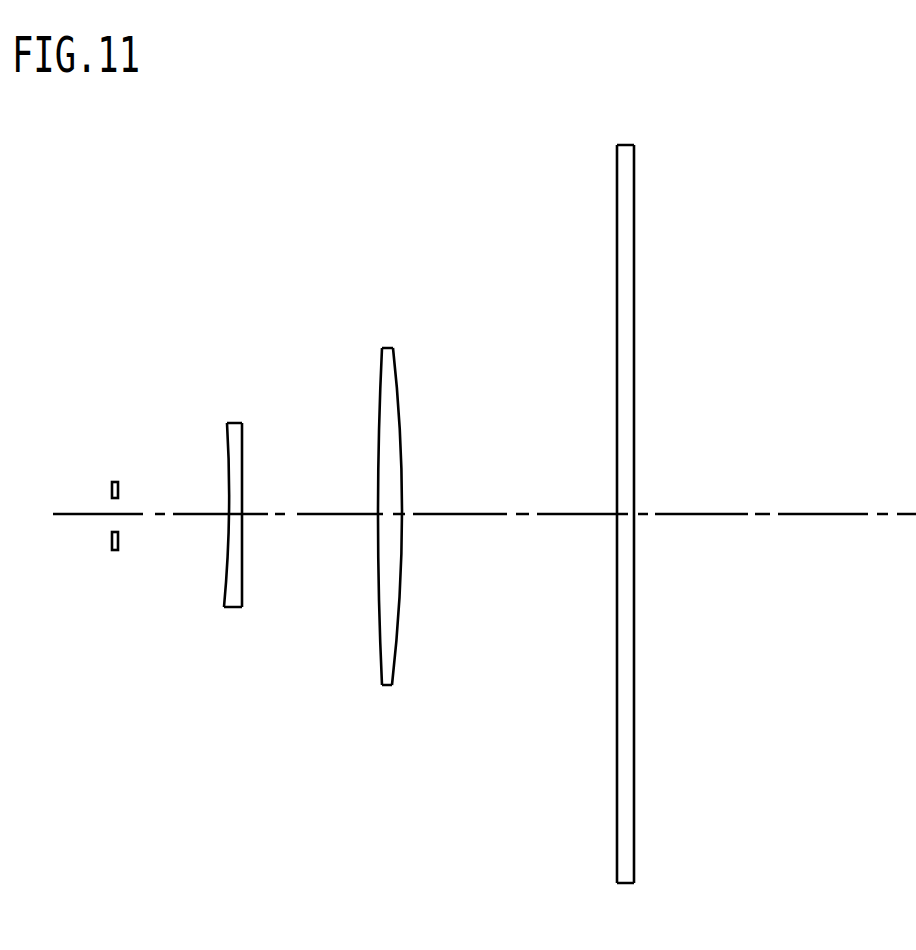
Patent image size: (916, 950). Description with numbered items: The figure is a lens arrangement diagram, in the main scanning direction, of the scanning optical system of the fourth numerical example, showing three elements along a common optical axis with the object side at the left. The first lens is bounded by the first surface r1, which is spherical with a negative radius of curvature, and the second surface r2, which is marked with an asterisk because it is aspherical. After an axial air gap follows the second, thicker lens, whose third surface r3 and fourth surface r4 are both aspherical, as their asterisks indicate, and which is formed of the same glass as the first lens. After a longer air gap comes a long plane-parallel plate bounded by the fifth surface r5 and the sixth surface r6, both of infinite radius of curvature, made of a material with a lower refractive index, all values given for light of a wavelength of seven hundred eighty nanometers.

The first surface r1 is at (227, 453).
The second surface r2 is at (328, 377).
The third surface r3 is at (380, 306).
The fourth surface r4 is at (505, 292).
The fifth surface r5 is at (617, 212).
The sixth surface r6 is at (634, 210).